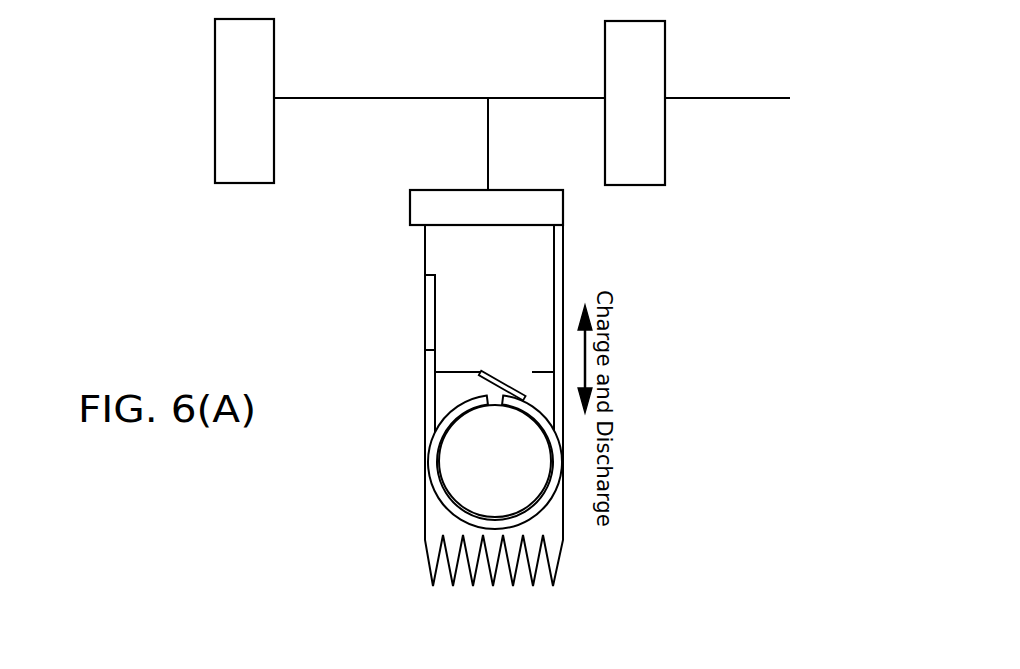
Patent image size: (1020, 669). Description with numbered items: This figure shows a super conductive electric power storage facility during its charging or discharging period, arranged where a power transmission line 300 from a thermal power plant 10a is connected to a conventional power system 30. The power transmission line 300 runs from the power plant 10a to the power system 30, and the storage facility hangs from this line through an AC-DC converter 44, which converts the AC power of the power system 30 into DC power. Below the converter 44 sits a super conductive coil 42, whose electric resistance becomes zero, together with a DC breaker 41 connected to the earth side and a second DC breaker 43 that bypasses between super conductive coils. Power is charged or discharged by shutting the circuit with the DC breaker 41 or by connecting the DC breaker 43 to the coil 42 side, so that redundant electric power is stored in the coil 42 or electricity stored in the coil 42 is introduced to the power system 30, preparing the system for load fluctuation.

The power transmission line 300 is at (400, 97).
The thermal power plant 10a is at (247, 185).
The power system 30 is at (730, 98).
The AC-DC converter 44 is at (552, 212).
The super conductive coil 42 is at (556, 548).
The DC breaker 41 is at (425, 301).
The DC breaker 43 is at (500, 377).